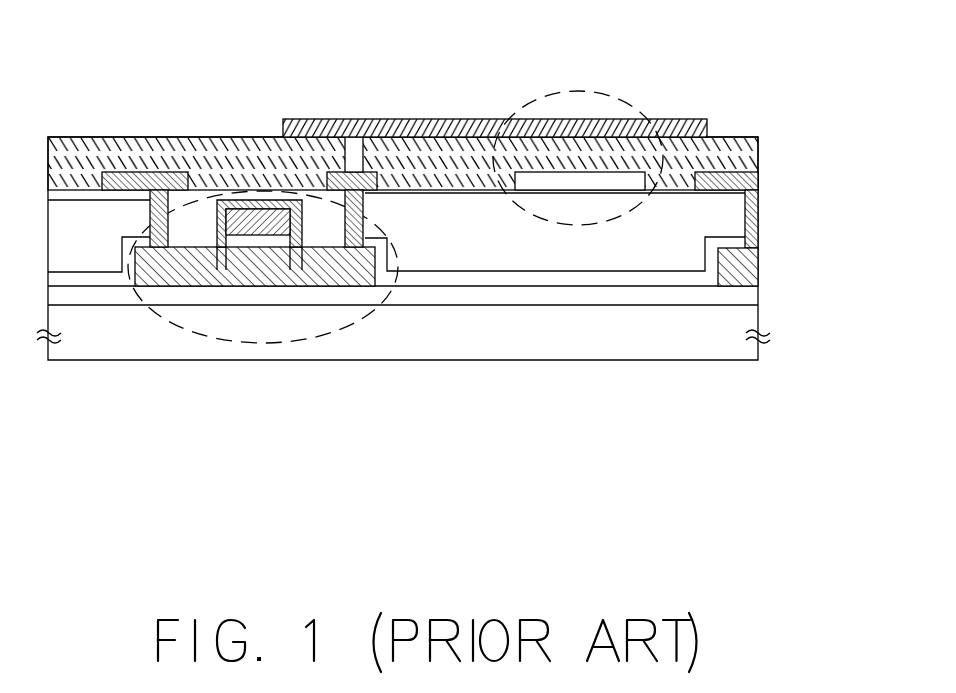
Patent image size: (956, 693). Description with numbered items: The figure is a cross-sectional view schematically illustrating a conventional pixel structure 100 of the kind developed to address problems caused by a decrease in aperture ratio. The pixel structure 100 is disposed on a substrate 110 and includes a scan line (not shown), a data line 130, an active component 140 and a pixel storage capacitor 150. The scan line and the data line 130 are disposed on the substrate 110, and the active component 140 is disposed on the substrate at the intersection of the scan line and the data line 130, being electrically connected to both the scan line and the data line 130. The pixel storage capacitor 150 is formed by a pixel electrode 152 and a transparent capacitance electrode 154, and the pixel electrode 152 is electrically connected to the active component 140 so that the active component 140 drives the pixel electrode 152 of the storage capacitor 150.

The pixel structure 100 is at (840, 393).
The substrate 110 is at (450, 347).
The data line 130 is at (149, 217).
The active component 140 is at (180, 324).
The pixel storage capacitor 150 is at (499, 115).
The pixel electrode 152 is at (566, 119).
The transparent capacitance electrode 154 is at (533, 182).